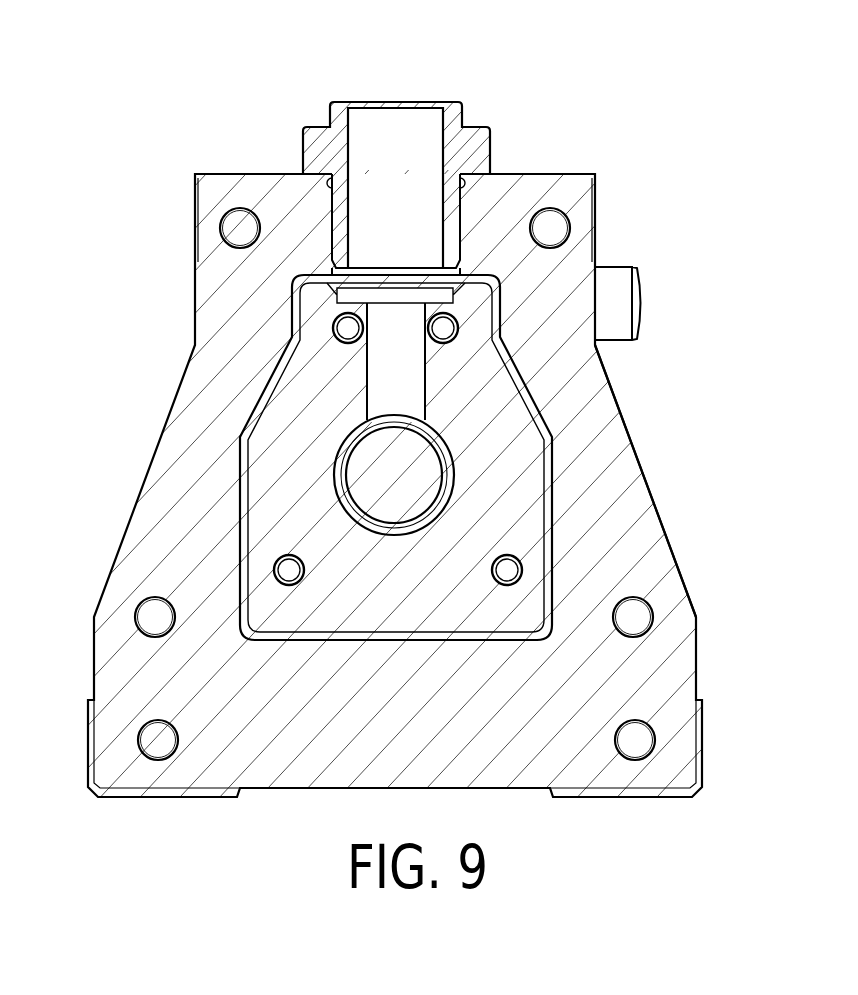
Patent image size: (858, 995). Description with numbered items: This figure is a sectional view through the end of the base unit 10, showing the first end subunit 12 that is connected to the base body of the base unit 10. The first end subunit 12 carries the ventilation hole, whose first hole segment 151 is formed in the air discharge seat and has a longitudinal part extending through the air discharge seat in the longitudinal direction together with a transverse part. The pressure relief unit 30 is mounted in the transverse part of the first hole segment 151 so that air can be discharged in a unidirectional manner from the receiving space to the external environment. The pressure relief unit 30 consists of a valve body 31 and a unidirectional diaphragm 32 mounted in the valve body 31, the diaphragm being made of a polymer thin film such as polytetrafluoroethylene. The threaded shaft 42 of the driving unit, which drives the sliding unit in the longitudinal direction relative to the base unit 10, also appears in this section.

The base unit 10 is at (683, 713).
The first end subunit 12 is at (580, 418).
The first hole segment 151 is at (398, 380).
The threaded shaft 42 is at (405, 483).
The pressure relief unit 30 is at (374, 157).
The valve body 31 is at (374, 185).
The unidirectional diaphragm 32 is at (395, 268).